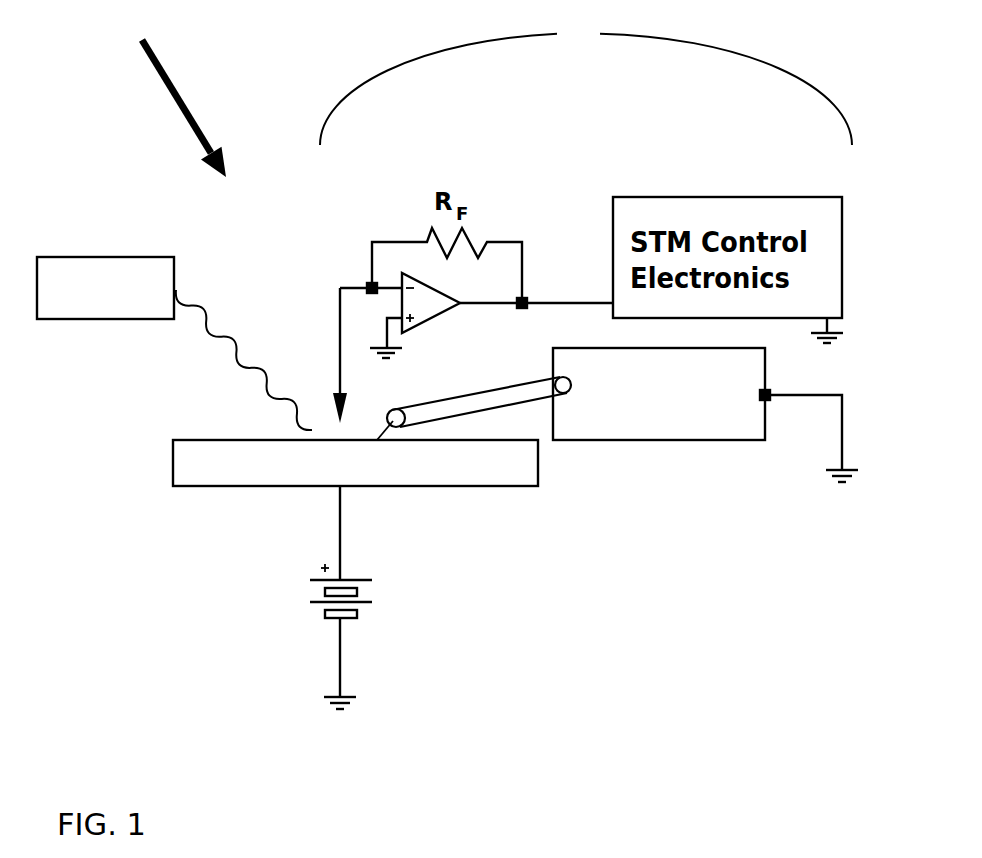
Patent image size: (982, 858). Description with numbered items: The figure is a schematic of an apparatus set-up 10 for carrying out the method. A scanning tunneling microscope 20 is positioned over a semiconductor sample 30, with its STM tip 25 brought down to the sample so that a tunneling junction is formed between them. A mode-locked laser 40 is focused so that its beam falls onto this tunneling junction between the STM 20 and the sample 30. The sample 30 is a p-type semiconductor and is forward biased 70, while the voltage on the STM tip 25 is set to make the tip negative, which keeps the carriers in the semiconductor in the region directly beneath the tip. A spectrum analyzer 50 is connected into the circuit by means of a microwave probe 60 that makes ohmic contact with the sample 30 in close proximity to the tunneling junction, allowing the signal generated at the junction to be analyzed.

The apparatus set-up 10 is at (167, 89).
The scanning tunneling microscope 20 is at (586, 85).
The STM tip 25 is at (338, 425).
The semiconductor sample 30 is at (503, 480).
The mode-locked laser 40 is at (150, 265).
The spectrum analyzer 50 is at (722, 429).
The microwave probe 60 is at (527, 403).
The forward bias 70 is at (300, 602).